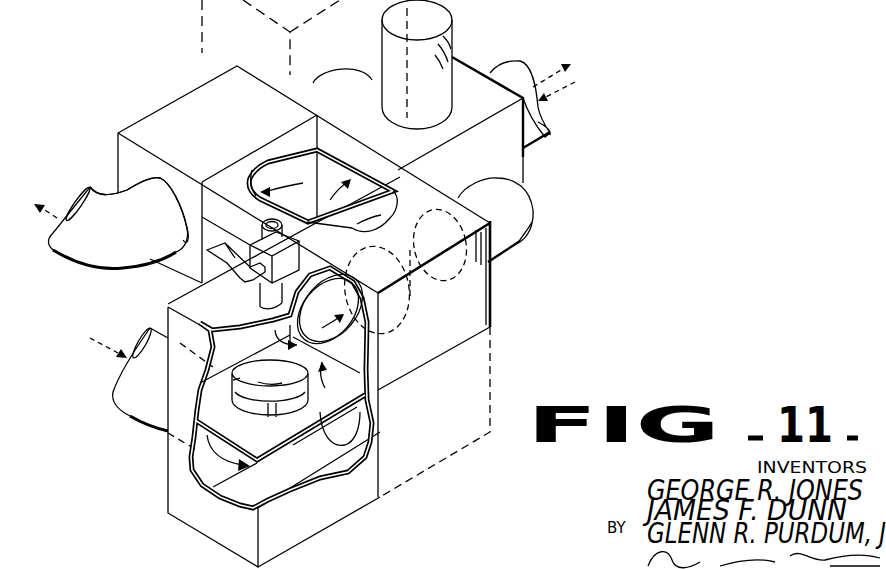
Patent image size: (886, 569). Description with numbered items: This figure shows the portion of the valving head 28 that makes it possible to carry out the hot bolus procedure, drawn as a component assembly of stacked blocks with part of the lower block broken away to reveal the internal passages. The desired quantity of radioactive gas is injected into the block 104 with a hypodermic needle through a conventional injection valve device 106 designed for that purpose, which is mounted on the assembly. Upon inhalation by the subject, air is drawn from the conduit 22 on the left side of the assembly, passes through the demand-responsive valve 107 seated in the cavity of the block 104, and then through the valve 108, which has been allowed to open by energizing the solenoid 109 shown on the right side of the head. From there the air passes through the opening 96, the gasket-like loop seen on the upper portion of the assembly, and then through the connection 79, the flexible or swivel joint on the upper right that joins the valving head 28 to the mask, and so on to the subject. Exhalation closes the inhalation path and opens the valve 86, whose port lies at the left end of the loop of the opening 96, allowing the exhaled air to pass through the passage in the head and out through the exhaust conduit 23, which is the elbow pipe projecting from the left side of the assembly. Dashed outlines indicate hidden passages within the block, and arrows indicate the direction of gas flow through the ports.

The conduit 22 is at (140, 410).
The exhaust conduit 23 is at (86, 260).
The valving head 28 is at (492, 338).
The swivel joint 79 is at (515, 72).
The valve 86 is at (282, 187).
The port 96 is at (385, 163).
The block 104 is at (187, 297).
The injection valve device 106 is at (258, 238).
The demand-responsive valve 107 is at (270, 386).
The valve 108 is at (342, 345).
The solenoid 109 is at (488, 262).